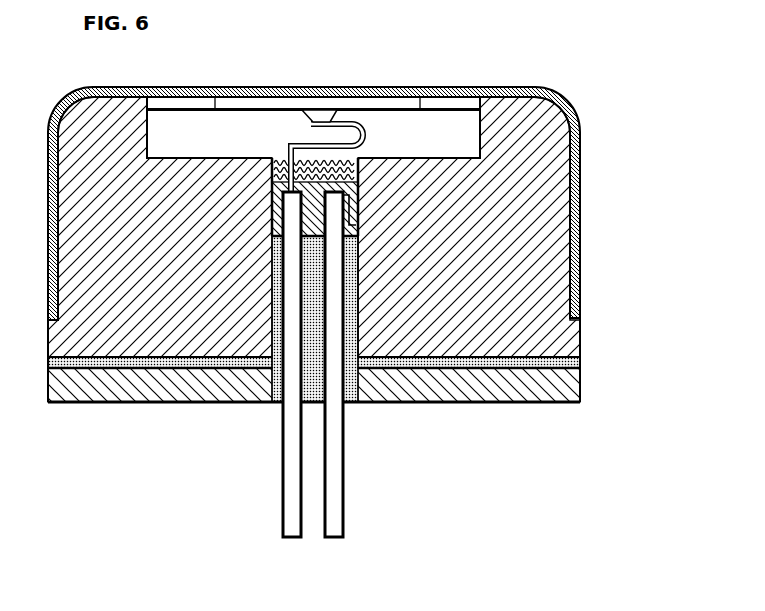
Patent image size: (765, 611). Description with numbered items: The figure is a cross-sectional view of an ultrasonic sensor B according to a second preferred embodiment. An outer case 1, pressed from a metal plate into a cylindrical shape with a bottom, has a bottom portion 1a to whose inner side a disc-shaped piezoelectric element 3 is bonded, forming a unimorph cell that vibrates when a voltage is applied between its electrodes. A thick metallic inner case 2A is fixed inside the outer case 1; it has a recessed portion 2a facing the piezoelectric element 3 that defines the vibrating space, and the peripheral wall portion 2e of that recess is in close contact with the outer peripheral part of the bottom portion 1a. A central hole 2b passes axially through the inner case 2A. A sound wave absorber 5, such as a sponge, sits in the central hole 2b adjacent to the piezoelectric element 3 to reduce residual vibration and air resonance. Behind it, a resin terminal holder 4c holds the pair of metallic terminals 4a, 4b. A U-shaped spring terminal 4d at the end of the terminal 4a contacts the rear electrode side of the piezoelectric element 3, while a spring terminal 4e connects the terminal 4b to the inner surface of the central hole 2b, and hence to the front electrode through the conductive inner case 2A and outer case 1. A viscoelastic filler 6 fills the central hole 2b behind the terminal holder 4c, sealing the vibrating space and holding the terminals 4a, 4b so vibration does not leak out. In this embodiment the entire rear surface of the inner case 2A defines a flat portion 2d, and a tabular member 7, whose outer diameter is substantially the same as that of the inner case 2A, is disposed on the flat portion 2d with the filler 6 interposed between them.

The outer case 1 is at (578, 127).
The bottom portion 1a is at (312, 96).
The inner case 2A is at (583, 236).
The recessed portion 2a is at (475, 112).
The peripheral wall portion 2e is at (515, 120).
The central hole 2b is at (357, 275).
The flat portion 2d is at (89, 360).
The piezoelectric element 3 is at (396, 104).
The metallic terminal 4a is at (290, 513).
The metallic terminal 4b is at (343, 512).
The terminal holder 4c is at (272, 203).
The spring terminal 4d is at (348, 123).
The spring terminal 4e is at (357, 208).
The sound wave absorber 5 is at (277, 160).
The filler 6 is at (310, 398).
The tabular member 7 is at (154, 396).
The ultrasonic sensor B is at (558, 94).